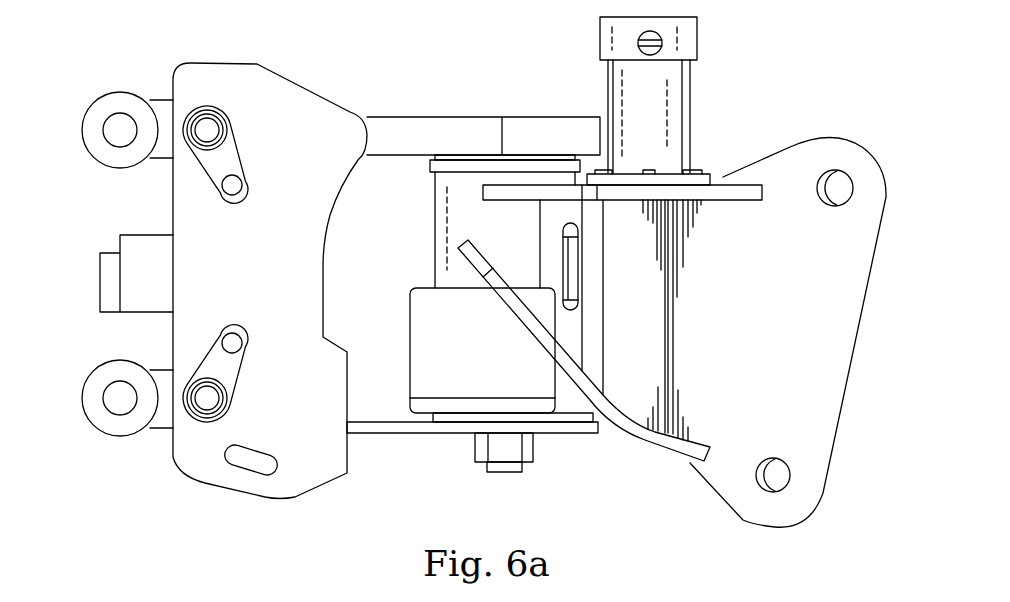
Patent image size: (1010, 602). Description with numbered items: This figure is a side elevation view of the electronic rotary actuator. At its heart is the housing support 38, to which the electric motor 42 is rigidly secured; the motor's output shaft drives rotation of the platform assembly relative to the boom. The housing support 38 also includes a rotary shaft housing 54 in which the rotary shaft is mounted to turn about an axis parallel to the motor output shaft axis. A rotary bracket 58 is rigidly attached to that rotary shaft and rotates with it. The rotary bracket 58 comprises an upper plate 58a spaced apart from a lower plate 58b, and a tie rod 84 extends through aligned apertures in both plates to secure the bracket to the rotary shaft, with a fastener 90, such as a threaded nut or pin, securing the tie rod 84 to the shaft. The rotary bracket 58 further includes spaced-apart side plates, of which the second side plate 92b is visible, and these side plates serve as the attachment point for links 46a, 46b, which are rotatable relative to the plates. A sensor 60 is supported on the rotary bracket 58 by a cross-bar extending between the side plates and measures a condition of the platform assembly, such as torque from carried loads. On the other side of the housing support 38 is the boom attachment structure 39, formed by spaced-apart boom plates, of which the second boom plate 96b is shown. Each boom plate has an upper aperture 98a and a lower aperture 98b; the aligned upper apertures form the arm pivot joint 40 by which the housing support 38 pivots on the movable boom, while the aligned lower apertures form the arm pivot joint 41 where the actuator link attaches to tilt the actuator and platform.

The housing support 38 is at (628, 468).
The boom attachment structure 39 is at (816, 289).
The arm pivot joint 40 is at (853, 187).
The arm pivot joint 41 is at (785, 478).
The electric motor 42 is at (691, 115).
The link 46a is at (120, 92).
The link 46b is at (120, 437).
The rotary shaft housing 54 is at (435, 223).
The rotary bracket 58 is at (473, 260).
The upper plate 58a is at (468, 127).
The lower plate 58b is at (393, 435).
The sensor 60 is at (96, 297).
The tie rod 84 is at (503, 475).
The fastener 90 is at (525, 450).
The second side plate 92b is at (224, 64).
The second boom plate 96b is at (858, 343).
The upper aperture 98a is at (830, 205).
The lower aperture 98b is at (768, 458).